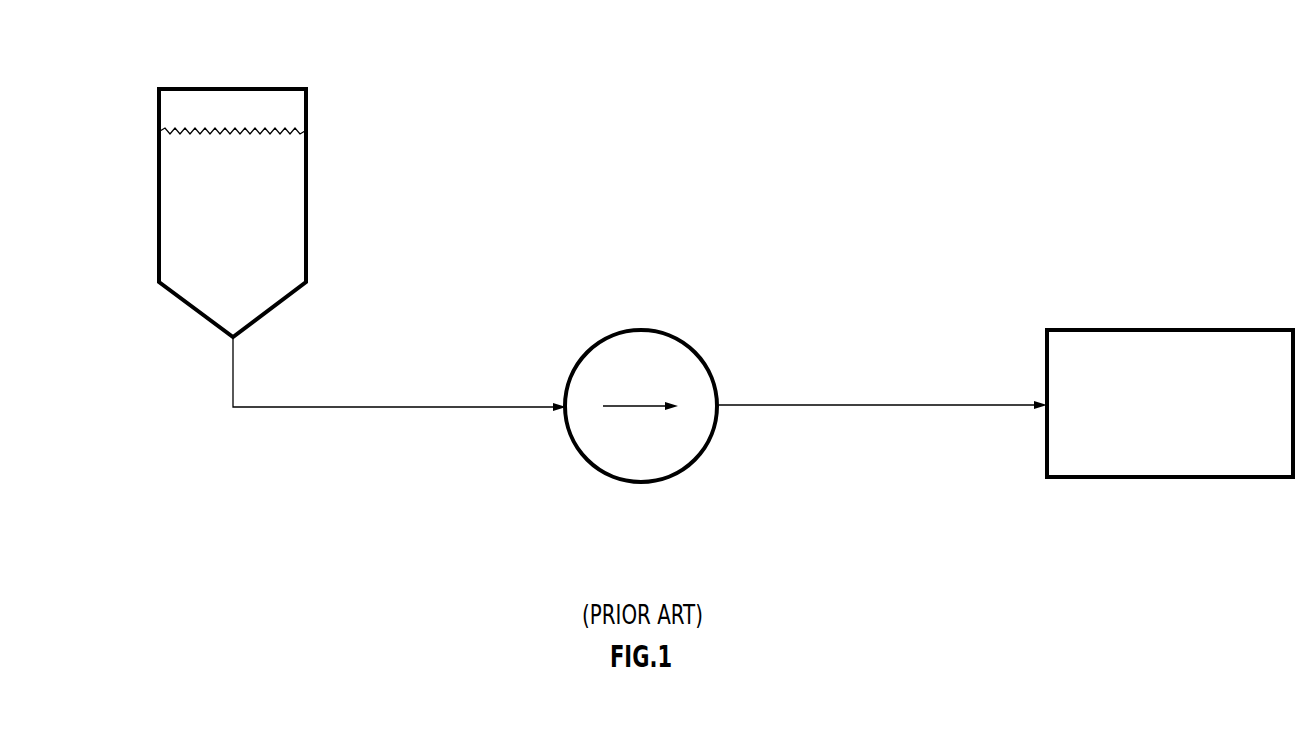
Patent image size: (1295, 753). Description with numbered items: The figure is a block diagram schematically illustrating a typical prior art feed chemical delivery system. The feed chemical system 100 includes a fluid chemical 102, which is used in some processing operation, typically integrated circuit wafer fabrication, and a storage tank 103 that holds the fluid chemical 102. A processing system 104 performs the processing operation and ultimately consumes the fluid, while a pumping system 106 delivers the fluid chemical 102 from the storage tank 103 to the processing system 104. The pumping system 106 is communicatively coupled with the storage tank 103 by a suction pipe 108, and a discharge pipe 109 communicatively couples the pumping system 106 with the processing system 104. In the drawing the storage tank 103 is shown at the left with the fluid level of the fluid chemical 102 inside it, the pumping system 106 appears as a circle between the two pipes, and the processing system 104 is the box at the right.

The feed chemical system 100 is at (150, 431).
The fluid chemical 102 is at (297, 200).
The storage tank 103 is at (260, 93).
The processing system 104 is at (1172, 335).
The pumping system 106 is at (653, 338).
The suction pipe 108 is at (372, 410).
The discharge pipe 109 is at (935, 405).